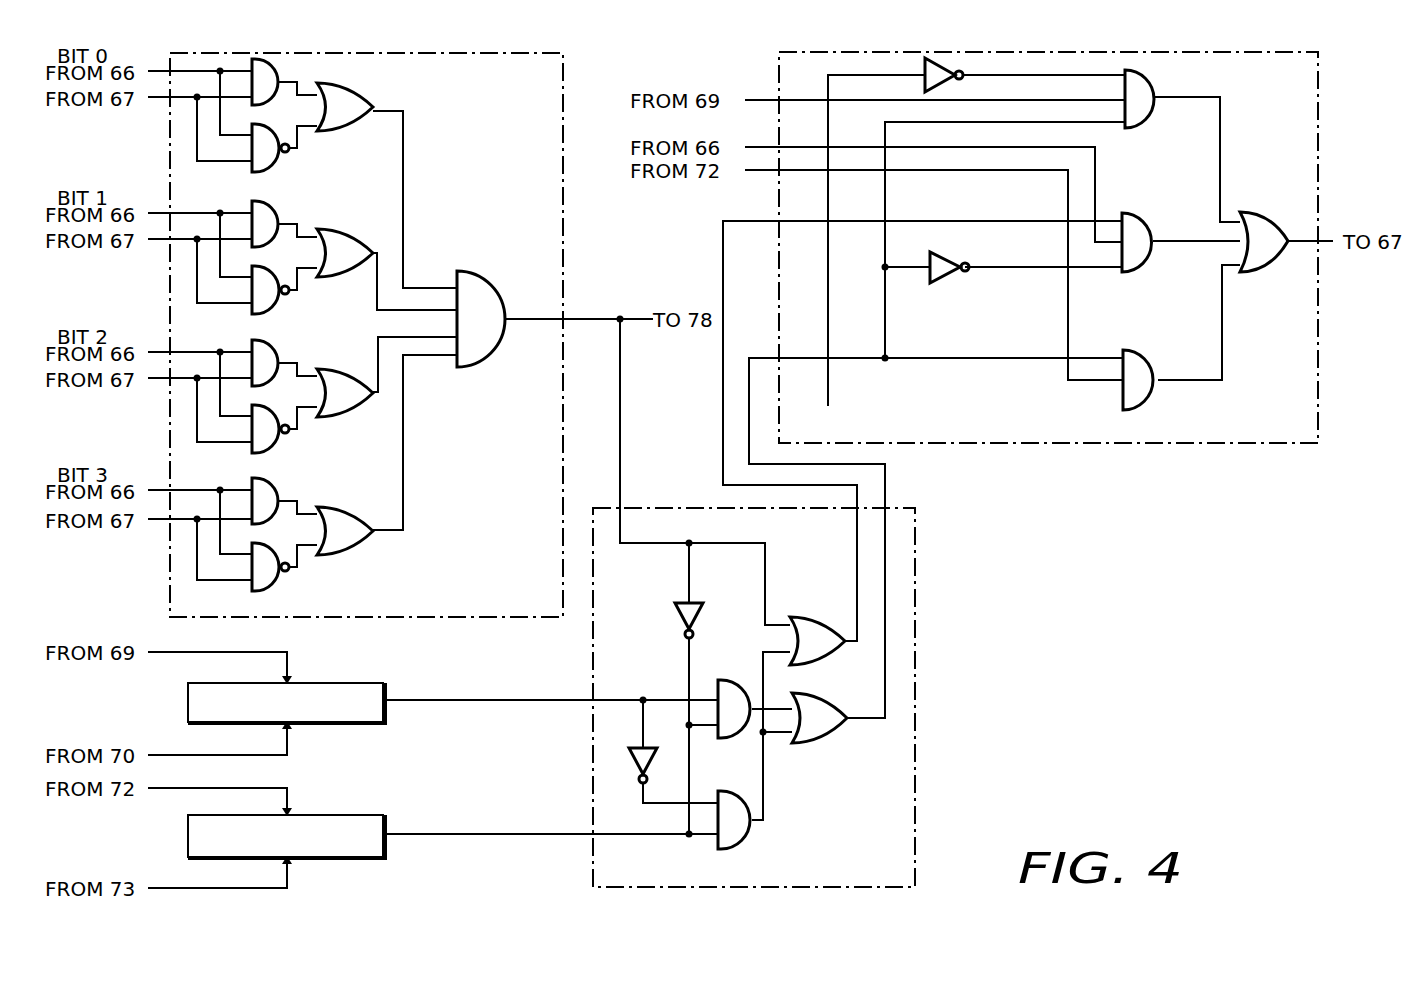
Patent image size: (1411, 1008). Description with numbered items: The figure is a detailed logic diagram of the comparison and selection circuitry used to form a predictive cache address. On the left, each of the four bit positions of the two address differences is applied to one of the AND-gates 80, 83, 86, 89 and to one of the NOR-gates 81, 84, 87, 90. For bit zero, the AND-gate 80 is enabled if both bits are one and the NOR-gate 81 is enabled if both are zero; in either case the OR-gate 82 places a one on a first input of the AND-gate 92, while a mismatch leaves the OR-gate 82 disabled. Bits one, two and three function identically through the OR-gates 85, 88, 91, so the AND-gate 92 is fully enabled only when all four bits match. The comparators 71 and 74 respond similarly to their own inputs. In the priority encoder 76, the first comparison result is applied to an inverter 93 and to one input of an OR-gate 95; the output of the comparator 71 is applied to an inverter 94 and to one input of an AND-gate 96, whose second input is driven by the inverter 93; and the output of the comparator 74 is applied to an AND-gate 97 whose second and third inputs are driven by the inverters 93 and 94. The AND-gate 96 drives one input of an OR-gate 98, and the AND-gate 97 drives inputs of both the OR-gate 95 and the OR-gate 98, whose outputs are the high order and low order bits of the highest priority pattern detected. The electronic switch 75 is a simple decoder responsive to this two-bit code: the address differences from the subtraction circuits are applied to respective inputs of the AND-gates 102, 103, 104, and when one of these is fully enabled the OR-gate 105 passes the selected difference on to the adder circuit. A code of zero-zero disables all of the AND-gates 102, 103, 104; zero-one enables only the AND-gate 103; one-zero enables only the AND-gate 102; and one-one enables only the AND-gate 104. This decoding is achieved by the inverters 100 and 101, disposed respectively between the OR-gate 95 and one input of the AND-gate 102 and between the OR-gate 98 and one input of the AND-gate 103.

The comparator 71 is at (356, 682).
The comparator 74 is at (351, 814).
The electronic switch 75 is at (1320, 115).
The priority encoder 76 is at (917, 555).
The AND-gate 80 is at (283, 66).
The NOR-gate 81 is at (281, 162).
The OR-gate 82 is at (357, 76).
The AND-gate 83 is at (276, 215).
The NOR-gate 84 is at (281, 303).
The OR-gate 85 is at (346, 210).
The AND-gate 86 is at (284, 345).
The NOR-gate 87 is at (281, 443).
The OR-gate 88 is at (569, 80).
The AND-gate 89 is at (276, 492).
The NOR-gate 90 is at (270, 590).
The OR-gate 91 is at (350, 478).
The AND-gate 92 is at (495, 256).
The inverter 93 is at (668, 642).
The inverter 94 is at (616, 776).
The OR-gate 95 is at (830, 614).
The AND-gate 96 is at (753, 686).
The AND-gate 97 is at (746, 794).
The OR-gate 98 is at (815, 698).
The inverter 100 is at (950, 62).
The inverter 101 is at (950, 258).
The AND-gate 102 is at (1156, 76).
The AND-gate 103 is at (1152, 208).
The AND-gate 104 is at (1143, 332).
The OR-gate 105 is at (1258, 208).